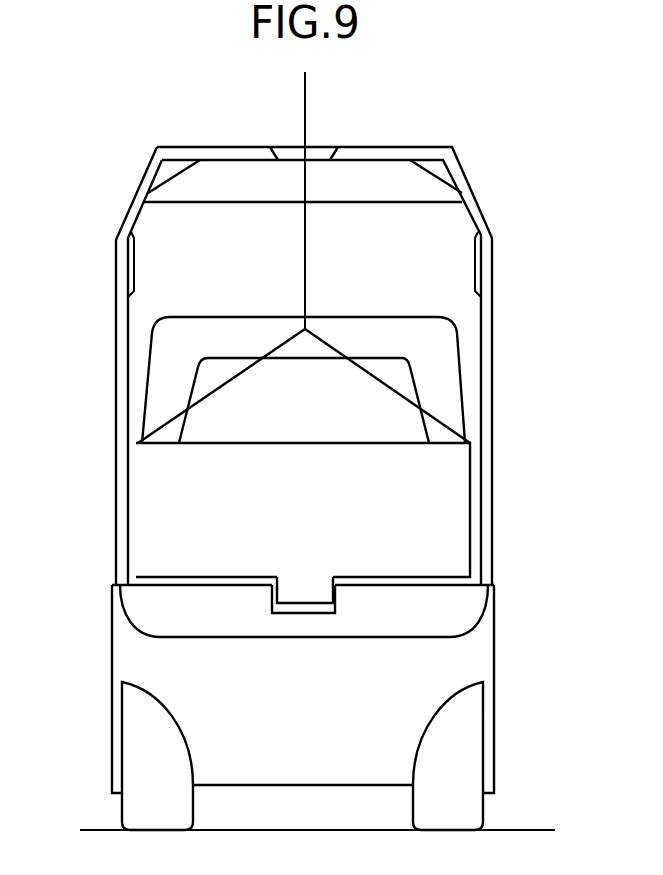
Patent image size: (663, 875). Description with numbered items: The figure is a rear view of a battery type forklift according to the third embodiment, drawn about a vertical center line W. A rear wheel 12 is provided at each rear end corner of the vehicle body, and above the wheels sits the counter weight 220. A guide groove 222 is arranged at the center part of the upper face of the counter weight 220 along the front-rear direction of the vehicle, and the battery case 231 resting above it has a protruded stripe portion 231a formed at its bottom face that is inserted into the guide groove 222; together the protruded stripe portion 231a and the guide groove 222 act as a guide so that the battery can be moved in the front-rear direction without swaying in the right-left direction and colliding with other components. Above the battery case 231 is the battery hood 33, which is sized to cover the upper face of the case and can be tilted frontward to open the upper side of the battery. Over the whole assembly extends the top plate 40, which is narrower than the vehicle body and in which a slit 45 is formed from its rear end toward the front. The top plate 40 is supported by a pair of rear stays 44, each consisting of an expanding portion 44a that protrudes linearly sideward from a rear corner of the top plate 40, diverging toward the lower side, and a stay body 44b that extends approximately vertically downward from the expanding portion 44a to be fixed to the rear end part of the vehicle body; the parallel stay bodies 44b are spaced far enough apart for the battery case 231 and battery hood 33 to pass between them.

The vehicle width direction W is at (306, 104).
The top plate 40 is at (401, 147).
The slit 45 is at (278, 157).
The rear stays 44 is at (56, 172).
The expanding portion 44a is at (137, 197).
The stay body 44b is at (120, 263).
The battery hood 33 is at (157, 378).
The battery case 231 is at (455, 466).
The protruded stripe portion 231a is at (318, 588).
The guide groove 222 is at (303, 612).
The counter weight 220 is at (483, 652).
The rear wheel 12 is at (132, 808).